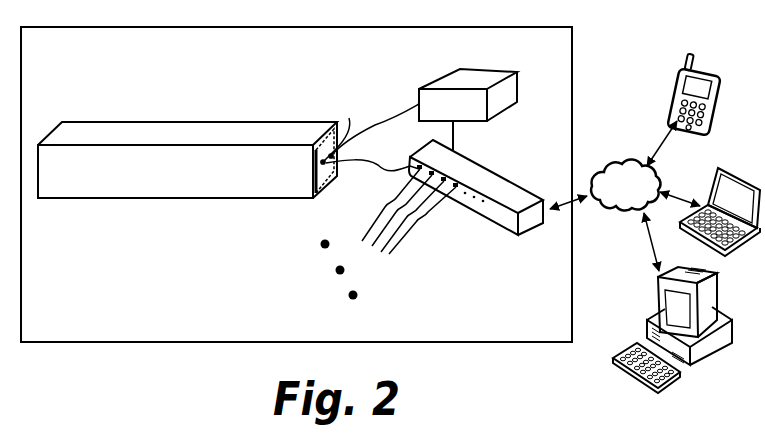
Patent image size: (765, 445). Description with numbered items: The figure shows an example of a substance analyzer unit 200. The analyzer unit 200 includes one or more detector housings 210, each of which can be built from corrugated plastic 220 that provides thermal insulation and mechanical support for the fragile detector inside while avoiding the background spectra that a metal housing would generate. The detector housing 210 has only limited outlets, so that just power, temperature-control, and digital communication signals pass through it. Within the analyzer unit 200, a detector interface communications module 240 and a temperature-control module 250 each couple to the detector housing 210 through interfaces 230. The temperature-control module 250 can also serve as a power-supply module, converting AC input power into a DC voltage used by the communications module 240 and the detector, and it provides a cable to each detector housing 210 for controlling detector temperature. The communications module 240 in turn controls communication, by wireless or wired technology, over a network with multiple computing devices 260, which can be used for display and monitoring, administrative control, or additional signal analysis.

The substance analyzer unit 200 is at (560, 335).
The detector housing 210 is at (273, 122).
The corrugated plastic 220 is at (337, 180).
The interfaces 230 is at (349, 118).
The detector interface communications module 240 is at (498, 229).
The temperature-control module 250 is at (497, 120).
The computing devices 260 is at (640, 58).